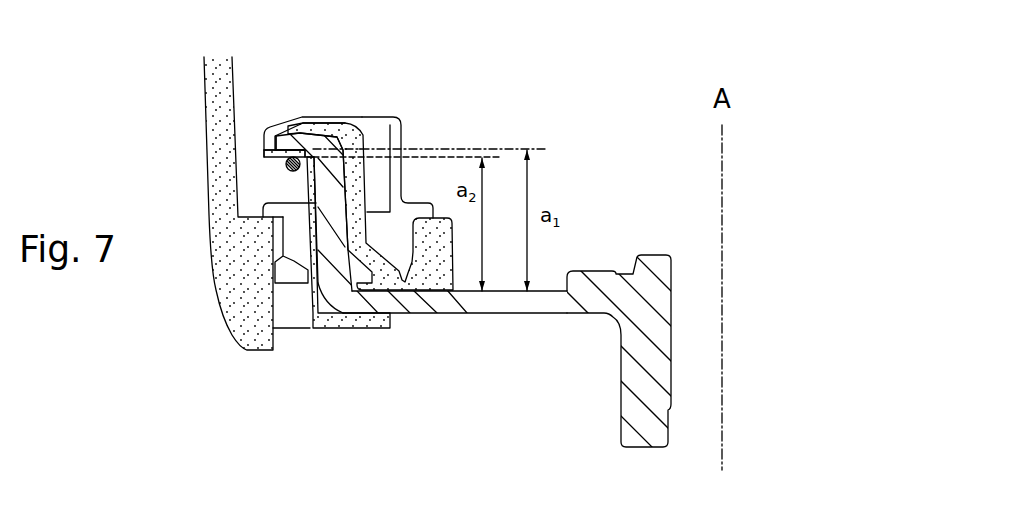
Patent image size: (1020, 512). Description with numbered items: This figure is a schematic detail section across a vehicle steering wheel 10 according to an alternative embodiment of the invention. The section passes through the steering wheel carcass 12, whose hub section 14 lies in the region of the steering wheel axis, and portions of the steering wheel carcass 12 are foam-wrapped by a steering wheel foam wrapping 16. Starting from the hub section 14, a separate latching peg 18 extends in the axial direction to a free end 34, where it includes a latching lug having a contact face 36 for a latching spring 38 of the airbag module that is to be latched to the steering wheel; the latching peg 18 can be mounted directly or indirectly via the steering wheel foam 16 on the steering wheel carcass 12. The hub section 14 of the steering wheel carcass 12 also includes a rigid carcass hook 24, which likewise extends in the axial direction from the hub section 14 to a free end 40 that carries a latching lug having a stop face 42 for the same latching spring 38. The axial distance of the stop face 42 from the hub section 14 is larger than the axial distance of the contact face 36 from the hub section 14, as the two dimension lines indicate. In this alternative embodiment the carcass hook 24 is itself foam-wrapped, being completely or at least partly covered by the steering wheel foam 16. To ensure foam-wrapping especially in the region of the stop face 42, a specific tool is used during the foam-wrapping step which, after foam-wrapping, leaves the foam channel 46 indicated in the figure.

The vehicle steering wheel 10 is at (592, 79).
The steering wheel carcass 12 is at (588, 303).
The hub section 14 is at (446, 344).
The steering wheel foam wrapping 16 is at (352, 124).
The latching peg 18 is at (402, 140).
The carcass hook 24 is at (330, 219).
The free end 34 is at (347, 85).
The contact face 36 is at (282, 157).
The latching spring 38 is at (291, 168).
The free end 40 is at (312, 108).
The stop face 42 is at (288, 148).
The foam channel 46 is at (290, 316).